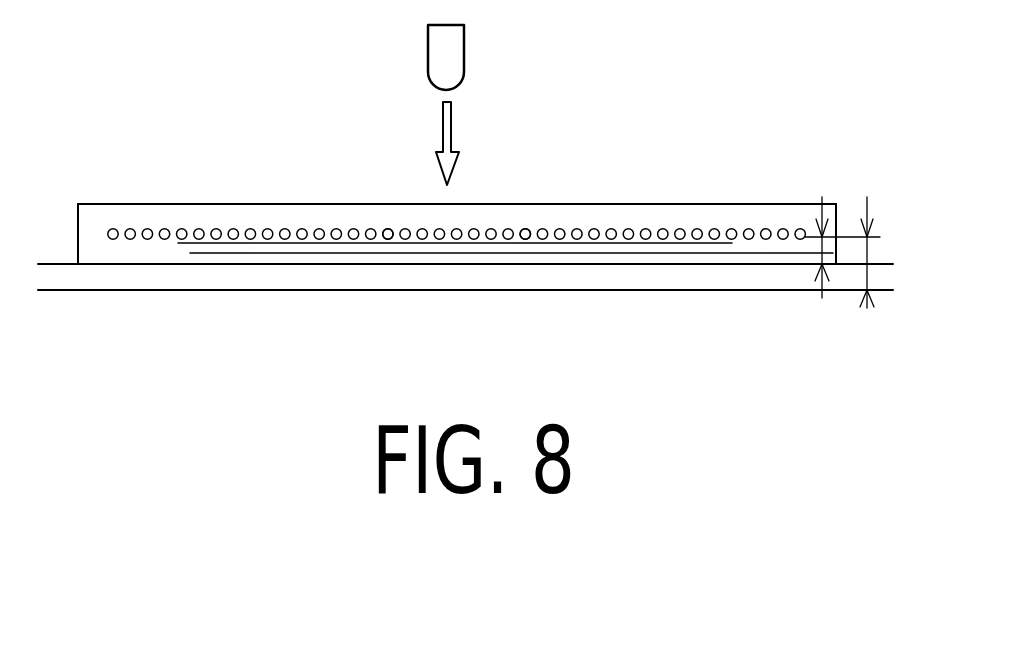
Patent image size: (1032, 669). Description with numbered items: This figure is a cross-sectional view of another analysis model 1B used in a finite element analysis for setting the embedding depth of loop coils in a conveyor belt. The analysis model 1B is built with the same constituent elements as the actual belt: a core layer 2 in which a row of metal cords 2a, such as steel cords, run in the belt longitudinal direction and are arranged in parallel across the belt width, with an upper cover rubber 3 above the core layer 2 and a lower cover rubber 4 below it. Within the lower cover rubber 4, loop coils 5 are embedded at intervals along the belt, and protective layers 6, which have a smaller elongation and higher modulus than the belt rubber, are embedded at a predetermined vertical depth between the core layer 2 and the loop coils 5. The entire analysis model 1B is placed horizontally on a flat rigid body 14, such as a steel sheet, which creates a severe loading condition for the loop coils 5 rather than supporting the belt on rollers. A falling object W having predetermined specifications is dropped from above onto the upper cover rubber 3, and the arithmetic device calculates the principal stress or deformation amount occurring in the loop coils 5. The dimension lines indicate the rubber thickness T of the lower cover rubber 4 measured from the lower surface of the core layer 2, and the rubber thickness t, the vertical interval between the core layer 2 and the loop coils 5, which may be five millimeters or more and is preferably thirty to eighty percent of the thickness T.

The analysis model 1B is at (742, 207).
The core layer 2 is at (644, 230).
The metal cords 2a is at (386, 227).
The upper cover rubber 3 is at (294, 220).
The lower cover rubber 4 is at (147, 250).
The loop coils 5 is at (265, 255).
The protective layers 6 is at (360, 244).
The rigid body 14 is at (428, 280).
The falling object W is at (460, 58).
The rubber thickness t is at (813, 247).
The rubber thickness T is at (867, 251).